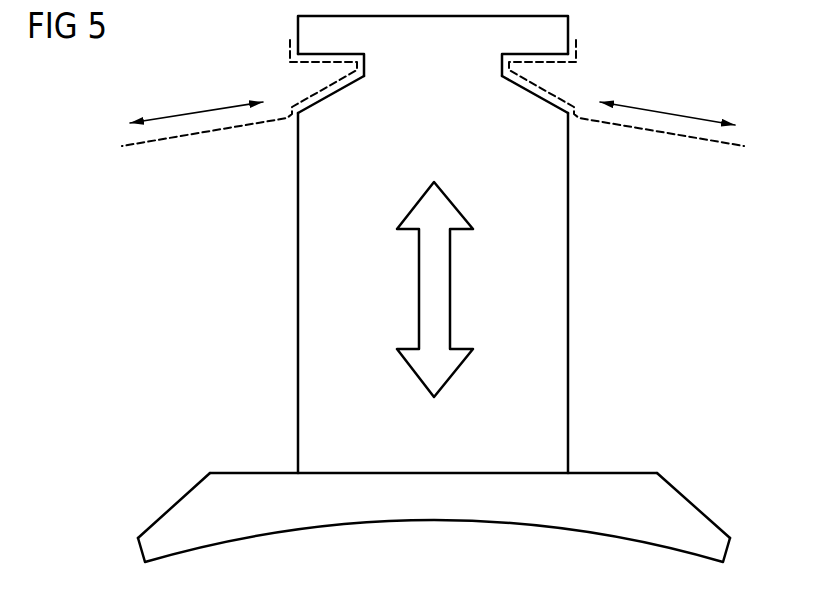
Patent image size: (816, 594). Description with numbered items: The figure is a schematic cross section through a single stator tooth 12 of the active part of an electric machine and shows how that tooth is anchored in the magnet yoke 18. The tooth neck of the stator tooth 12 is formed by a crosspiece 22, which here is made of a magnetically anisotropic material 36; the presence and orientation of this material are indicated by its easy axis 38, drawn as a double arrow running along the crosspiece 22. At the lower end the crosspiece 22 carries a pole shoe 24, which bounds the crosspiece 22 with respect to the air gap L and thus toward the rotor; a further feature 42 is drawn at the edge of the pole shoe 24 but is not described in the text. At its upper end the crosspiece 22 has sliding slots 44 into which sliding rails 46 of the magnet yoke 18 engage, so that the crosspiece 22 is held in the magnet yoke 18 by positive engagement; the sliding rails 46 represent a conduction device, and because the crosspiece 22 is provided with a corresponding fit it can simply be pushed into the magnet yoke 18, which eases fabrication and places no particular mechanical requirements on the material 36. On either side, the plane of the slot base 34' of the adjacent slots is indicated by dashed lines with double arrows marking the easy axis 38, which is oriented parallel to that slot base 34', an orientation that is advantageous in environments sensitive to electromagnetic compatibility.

The stator tooth 12 is at (178, 308).
The magnet yoke 18 is at (154, 68).
The crosspiece 22 is at (388, 413).
The pole shoe 24 is at (677, 492).
The slot base 34' is at (433, 129).
The magnetically anisotropic material 36 is at (557, 253).
The easy axis 38 is at (205, 103).
The chamfered edge 42 is at (692, 530).
The sliding slot 44 is at (349, 55).
The sliding rail 46 is at (320, 78).
The air gap L is at (440, 580).